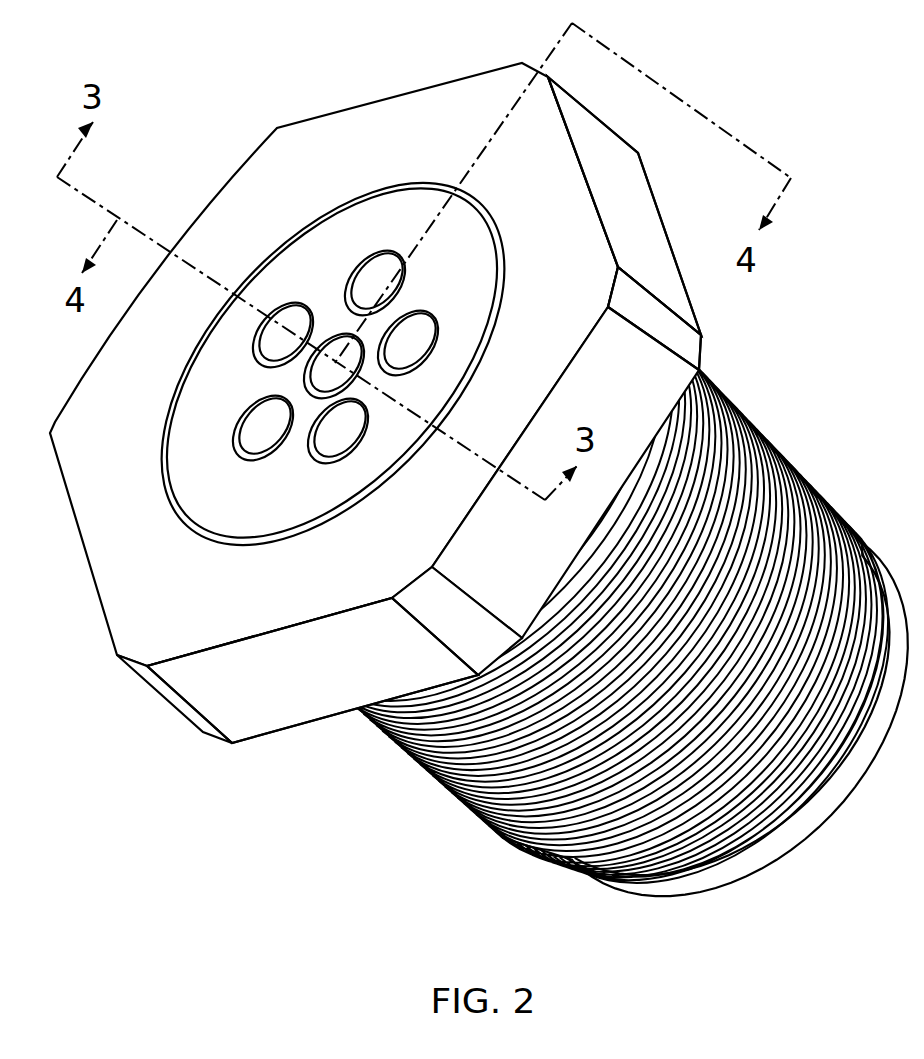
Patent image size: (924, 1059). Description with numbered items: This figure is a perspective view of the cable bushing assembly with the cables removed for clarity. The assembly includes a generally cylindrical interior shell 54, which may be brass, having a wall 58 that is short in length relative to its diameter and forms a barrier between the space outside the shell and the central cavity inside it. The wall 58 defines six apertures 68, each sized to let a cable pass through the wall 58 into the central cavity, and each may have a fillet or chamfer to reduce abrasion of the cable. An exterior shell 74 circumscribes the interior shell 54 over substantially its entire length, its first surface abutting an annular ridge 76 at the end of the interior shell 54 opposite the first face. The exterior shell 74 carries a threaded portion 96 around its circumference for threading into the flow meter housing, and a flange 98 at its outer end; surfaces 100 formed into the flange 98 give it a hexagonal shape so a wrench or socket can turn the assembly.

The interior shell 54 is at (390, 207).
The wall 58 is at (322, 240).
The aperture 68 is at (248, 440).
The exterior shell 74 is at (52, 436).
The annular ridge 76 is at (657, 897).
The threaded portion 96 is at (775, 425).
The flange 98 is at (677, 266).
The surfaces 100 is at (640, 194).